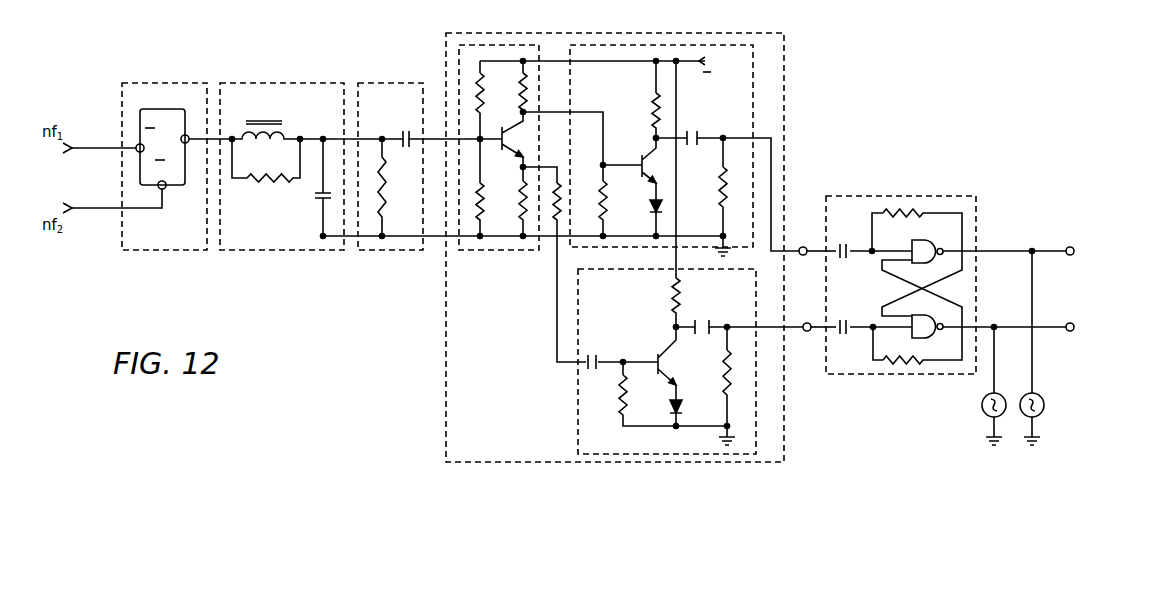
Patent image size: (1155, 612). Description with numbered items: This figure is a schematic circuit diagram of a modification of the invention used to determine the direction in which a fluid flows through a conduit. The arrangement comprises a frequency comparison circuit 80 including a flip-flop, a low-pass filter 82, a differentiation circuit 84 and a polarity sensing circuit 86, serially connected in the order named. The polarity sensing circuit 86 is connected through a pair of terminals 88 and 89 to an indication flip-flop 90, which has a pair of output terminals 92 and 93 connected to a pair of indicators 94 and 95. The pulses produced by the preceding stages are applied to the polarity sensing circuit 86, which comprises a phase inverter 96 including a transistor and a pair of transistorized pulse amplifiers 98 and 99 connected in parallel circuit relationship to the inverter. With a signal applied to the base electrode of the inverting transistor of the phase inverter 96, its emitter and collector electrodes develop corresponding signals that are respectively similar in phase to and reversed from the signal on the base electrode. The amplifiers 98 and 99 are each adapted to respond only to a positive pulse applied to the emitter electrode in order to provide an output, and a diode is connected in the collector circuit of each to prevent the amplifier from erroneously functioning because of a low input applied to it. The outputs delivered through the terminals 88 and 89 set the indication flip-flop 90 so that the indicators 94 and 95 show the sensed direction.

The frequency comparison circuit 80 is at (160, 250).
The low-pass filter 82 is at (291, 252).
The differentiation circuit 84 is at (405, 250).
The polarity sensing circuit 86 is at (785, 45).
The terminal 88 is at (804, 246).
The terminal 89 is at (806, 331).
The indication flip-flop 90 is at (976, 197).
The output terminal 92 is at (1073, 254).
The output terminal 93 is at (1074, 323).
The indicator 94 is at (1045, 405).
The indicator 95 is at (984, 405).
The phase inverter 96 is at (500, 250).
The transistorized pulse amplifier 98 is at (753, 78).
The transistorized pulse amplifier 99 is at (577, 406).